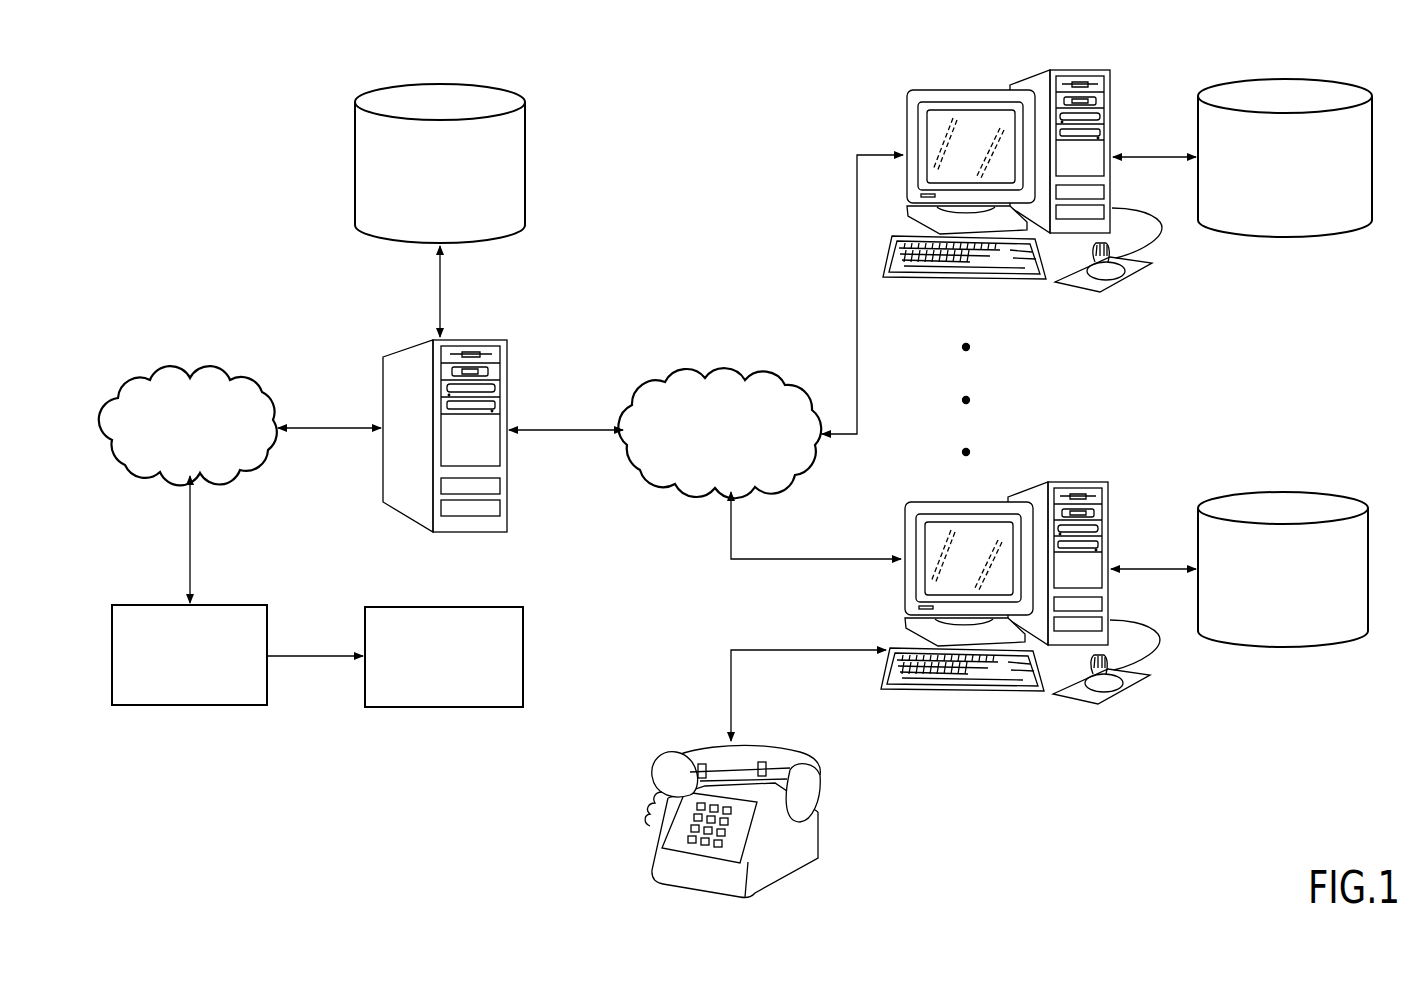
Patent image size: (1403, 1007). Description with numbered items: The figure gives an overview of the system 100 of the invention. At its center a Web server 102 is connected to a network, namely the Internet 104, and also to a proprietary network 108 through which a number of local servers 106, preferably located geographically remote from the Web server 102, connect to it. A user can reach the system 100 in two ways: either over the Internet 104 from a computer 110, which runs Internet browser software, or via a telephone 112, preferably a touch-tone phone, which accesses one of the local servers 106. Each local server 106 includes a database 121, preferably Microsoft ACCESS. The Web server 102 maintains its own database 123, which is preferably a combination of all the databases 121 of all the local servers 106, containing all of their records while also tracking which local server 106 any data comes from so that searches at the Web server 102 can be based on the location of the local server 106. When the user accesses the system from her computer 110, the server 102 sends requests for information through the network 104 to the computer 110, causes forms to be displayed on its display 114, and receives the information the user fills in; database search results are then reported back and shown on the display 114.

The system 100 is at (672, 621).
The Web server 102 is at (508, 490).
The Internet 104 is at (197, 378).
The local server 106 is at (985, 280).
The proprietary network 108 is at (727, 380).
The computer 110 is at (192, 705).
The telephone 112 is at (785, 858).
The display 114 is at (447, 707).
The database 121 is at (1302, 237).
The database 123 is at (525, 170).